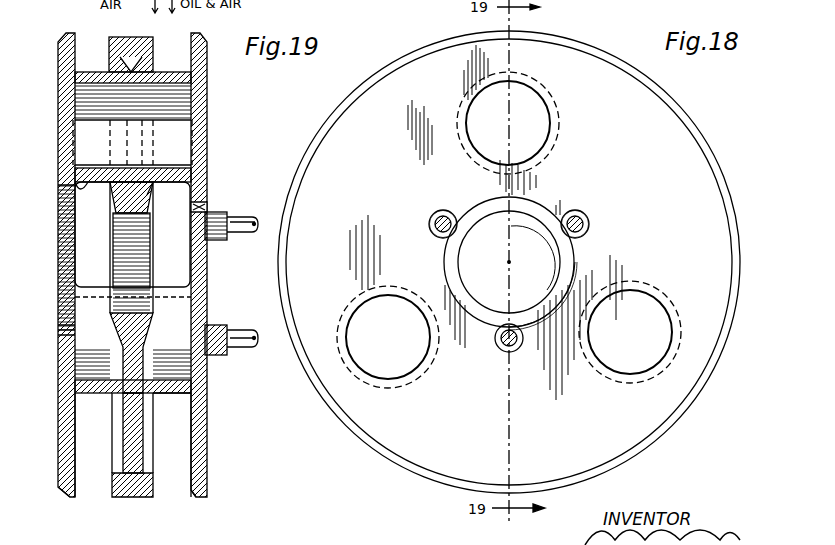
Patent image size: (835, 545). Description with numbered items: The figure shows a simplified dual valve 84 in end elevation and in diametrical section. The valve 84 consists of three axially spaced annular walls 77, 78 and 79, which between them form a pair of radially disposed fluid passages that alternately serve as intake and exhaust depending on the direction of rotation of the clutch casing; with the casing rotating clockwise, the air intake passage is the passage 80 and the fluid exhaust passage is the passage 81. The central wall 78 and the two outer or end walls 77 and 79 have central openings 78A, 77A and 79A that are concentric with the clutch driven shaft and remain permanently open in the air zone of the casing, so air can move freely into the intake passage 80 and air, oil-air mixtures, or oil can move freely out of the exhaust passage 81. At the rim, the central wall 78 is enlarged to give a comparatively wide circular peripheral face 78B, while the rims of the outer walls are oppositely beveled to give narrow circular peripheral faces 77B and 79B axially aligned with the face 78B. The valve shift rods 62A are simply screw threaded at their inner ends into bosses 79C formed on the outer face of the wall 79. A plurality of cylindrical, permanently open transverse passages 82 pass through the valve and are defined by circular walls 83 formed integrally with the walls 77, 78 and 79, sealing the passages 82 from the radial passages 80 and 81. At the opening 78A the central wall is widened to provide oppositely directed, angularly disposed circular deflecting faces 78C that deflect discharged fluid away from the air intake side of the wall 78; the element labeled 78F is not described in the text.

In FIG. 19, the outer end wall 77 is at (62, 448).
In FIG. 19, the central opening of wall 77 77A is at (62, 333).
In FIG. 19, the peripheral face of wall 77 77B is at (55, 515).
In FIG. 19, the central wall 78 is at (127, 418).
In FIG. 19, the central opening of wall 78 78A is at (138, 313).
In FIG. 18, the central opening of wall 78 78A is at (458, 262).
In FIG. 19, the peripheral face of wall 78 78B is at (128, 37).
In FIG. 19, the fluid deflecting faces 78C is at (112, 200).
In FIG. 19, the stem flange 78F is at (155, 195).
In FIG. 19, the outer end wall 79 is at (203, 446).
In FIG. 18, the outer end wall 79 is at (362, 122).
In FIG. 19, the central opening of wall 79 79A is at (205, 205).
In FIG. 18, the central opening of wall 79 79A is at (446, 280).
In FIG. 19, the peripheral face of wall 79 79B is at (200, 34).
In FIG. 18, the peripheral face of wall 79 79B is at (315, 148).
In FIG. 19, the bosses 79C is at (218, 240).
In FIG. 18, the bosses 79C is at (608, 226).
In FIG. 19, the air intake passage 80 is at (175, 413).
In FIG. 19, the fluid exhaust passage 81 is at (90, 408).
In FIG. 19, the transverse passages 82 is at (180, 142).
In FIG. 18, the transverse passages 82 is at (533, 127).
In FIG. 19, the circular walls 83 is at (78, 95).
In FIG. 18, the circular walls 83 is at (562, 133).
In FIG. 19, the dual valve 84 is at (215, 95).
In FIG. 18, the dual valve 84 is at (407, 43).
In FIG. 19, the valve shift rods 62A is at (240, 224).
In FIG. 18, the valve shift rods 62A is at (597, 207).